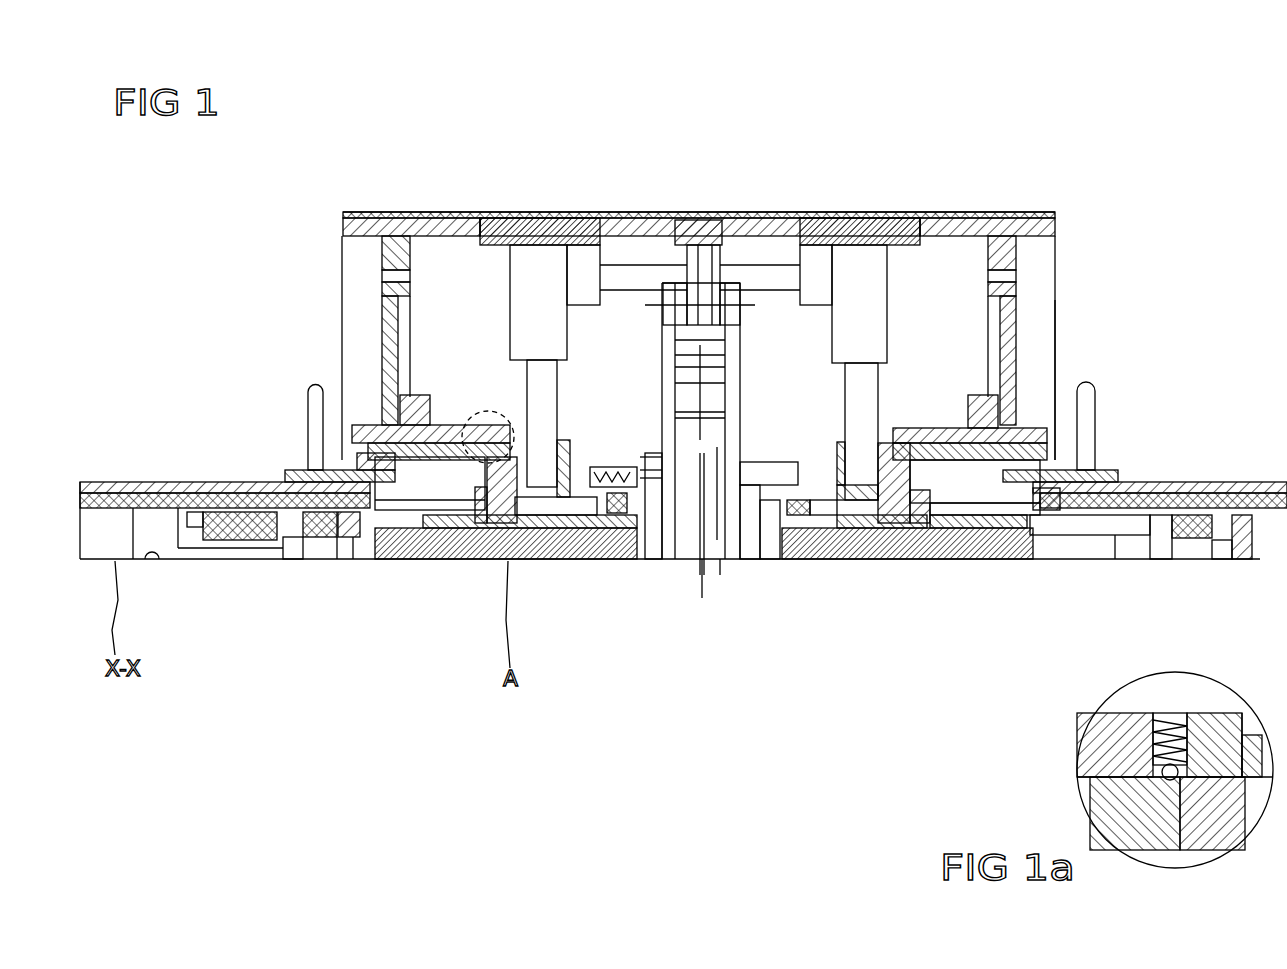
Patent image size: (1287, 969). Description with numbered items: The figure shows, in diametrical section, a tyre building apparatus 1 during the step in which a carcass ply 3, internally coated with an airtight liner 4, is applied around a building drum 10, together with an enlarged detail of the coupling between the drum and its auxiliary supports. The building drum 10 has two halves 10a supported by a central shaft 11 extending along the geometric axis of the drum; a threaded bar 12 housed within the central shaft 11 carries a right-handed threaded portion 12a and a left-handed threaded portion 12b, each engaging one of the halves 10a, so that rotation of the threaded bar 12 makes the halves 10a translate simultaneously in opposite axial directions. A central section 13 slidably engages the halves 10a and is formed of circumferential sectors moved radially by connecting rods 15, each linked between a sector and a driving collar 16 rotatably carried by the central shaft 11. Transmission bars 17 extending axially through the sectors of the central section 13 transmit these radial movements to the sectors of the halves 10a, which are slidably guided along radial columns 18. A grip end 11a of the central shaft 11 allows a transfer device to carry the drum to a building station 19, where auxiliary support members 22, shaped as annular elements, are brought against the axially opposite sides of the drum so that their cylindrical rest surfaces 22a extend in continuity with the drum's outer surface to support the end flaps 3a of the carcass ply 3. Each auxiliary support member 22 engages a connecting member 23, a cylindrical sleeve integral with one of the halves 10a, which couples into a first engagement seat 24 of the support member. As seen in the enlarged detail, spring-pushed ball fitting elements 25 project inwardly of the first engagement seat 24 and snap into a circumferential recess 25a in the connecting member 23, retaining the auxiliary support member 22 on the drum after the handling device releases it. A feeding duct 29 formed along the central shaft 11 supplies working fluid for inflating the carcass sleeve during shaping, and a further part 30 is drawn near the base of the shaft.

In FIG. 1, the apparatus 1 is at (797, 140).
In FIG. 1, the carcass ply 3 is at (700, 178).
In FIG. 1, the end flaps 3a is at (699, 173).
In FIG. 1, the liner 4 is at (699, 165).
In FIG. 1, the building drum 10 is at (682, 508).
In FIG. 1, the halves 10a is at (716, 179).
In FIG. 1, the central shaft 11 is at (683, 452).
In FIG. 1, the grip end 11a is at (683, 409).
In FIG. 1, the threaded bar 12 is at (670, 600).
In FIG. 1, the right-handed threaded portion 12a is at (725, 606).
In FIG. 1, the left-handed threaded portion 12b is at (907, 586).
In FIG. 1, the central section 13 is at (695, 224).
In FIG. 1, the connecting rods 15 is at (746, 376).
In FIG. 1, the driving collar 16 is at (770, 507).
In FIG. 1, the transmission bars 17 is at (695, 223).
In FIG. 1, the columns 18 is at (698, 372).
In FIG. 1, the building station 19 is at (1140, 376).
In FIG. 1, the auxiliary support members 22 is at (700, 322).
In FIG. 1, the rest surfaces 22a is at (736, 269).
In FIG. 1, the connecting members 23 is at (684, 537).
In FIG. 1A, the connecting members 23 is at (1120, 781).
In FIG. 1, the first engagement seat 24 is at (699, 392).
In FIG. 1A, the fitting elements 25 is at (1220, 706).
In FIG. 1A, the recess 25a is at (1200, 838).
In FIG. 1, the feeding duct 29 is at (740, 632).
In FIG. 1, the bearing housing 30 is at (676, 552).